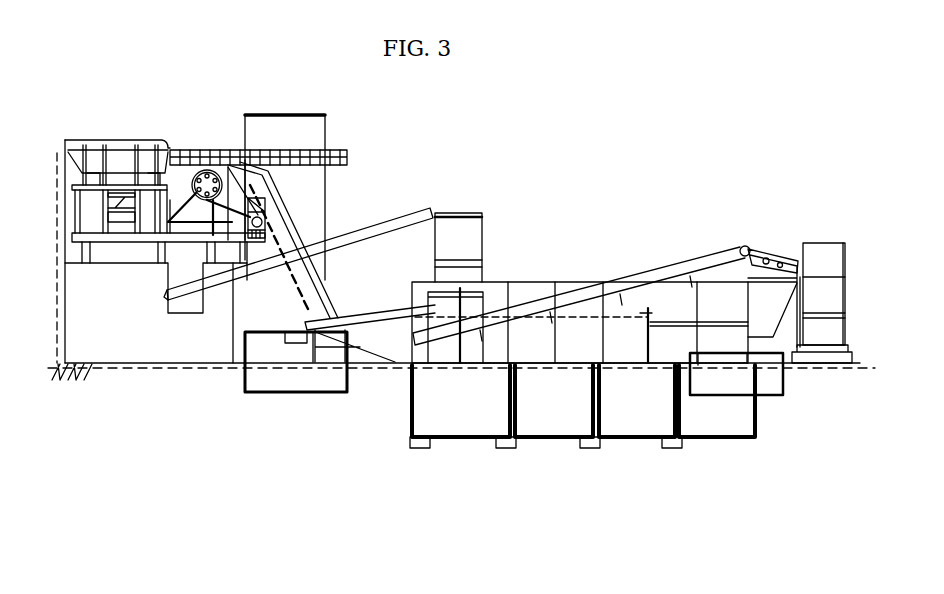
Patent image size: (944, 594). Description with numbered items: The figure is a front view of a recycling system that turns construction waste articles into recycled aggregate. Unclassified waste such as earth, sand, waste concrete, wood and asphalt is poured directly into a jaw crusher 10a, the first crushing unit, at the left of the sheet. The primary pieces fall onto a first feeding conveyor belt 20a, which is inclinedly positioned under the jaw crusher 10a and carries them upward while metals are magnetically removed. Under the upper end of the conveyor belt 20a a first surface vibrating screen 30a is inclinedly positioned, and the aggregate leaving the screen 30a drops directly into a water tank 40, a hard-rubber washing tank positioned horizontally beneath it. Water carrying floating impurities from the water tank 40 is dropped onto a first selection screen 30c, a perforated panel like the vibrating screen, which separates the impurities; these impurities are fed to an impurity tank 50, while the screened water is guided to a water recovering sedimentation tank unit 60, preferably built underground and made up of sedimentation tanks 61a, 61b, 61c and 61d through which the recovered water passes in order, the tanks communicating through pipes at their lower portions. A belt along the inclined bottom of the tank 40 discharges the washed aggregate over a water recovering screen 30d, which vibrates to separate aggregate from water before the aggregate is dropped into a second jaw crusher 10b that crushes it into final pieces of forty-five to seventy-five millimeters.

The jaw crusher 10a is at (277, 190).
The first feeding conveyor belt 20a is at (377, 223).
The first surface vibrating screen 30a is at (475, 250).
The water tank 40 is at (522, 297).
The first selection screen 30c is at (387, 336).
The water recovering screen 30d is at (767, 255).
The second jaw crusher 10b is at (828, 257).
The impurity tank 50 is at (287, 390).
The water recovering sedimentation tank unit 60 is at (596, 429).
The sedimentation tank 61a is at (463, 406).
The sedimentation tank 61b is at (557, 406).
The sedimentation tank 61c is at (640, 406).
The sedimentation tank 61d is at (717, 401).